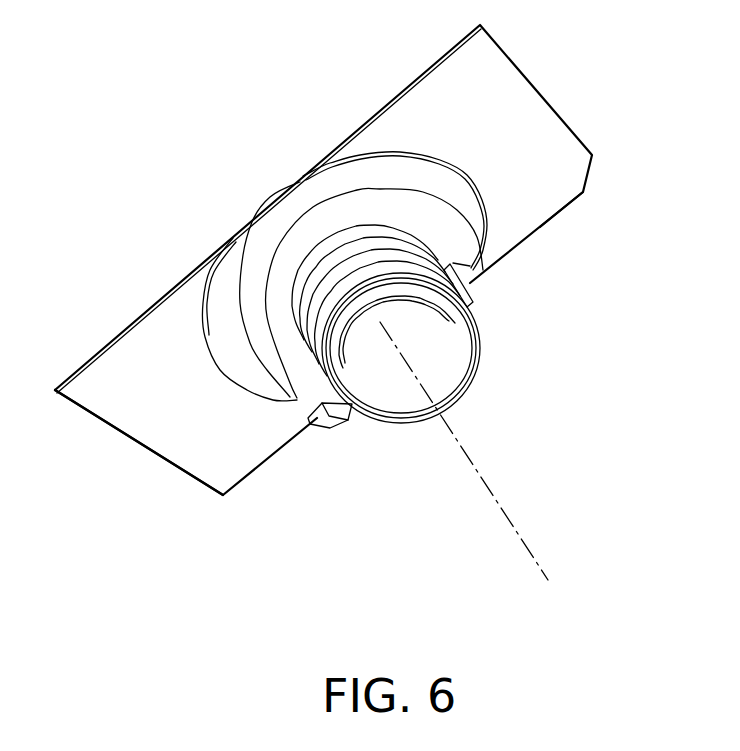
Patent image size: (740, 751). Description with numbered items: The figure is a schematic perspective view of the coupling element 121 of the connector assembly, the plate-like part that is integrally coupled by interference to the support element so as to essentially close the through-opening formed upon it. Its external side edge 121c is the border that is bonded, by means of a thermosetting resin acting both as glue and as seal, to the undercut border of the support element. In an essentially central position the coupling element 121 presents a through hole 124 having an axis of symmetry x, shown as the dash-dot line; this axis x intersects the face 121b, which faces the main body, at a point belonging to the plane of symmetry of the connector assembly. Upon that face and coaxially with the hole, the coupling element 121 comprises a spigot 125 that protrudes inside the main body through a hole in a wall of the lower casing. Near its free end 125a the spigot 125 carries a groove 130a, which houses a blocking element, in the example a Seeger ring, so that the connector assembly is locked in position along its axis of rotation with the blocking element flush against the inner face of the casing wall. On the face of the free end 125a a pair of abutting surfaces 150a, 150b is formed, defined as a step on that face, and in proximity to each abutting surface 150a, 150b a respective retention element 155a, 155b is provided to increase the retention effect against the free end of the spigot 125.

The coupling element 121 is at (212, 132).
The face 121b is at (538, 224).
The external side edge 121c is at (130, 438).
The through hole 124 is at (418, 326).
The spigot 125 is at (255, 407).
The free end 125a is at (412, 423).
The groove 130a is at (408, 240).
The abutting surface 150a is at (481, 276).
The abutting surface 150b is at (307, 410).
The retention element 155a is at (456, 262).
The retention element 155b is at (300, 403).
The axis of symmetry x is at (512, 522).